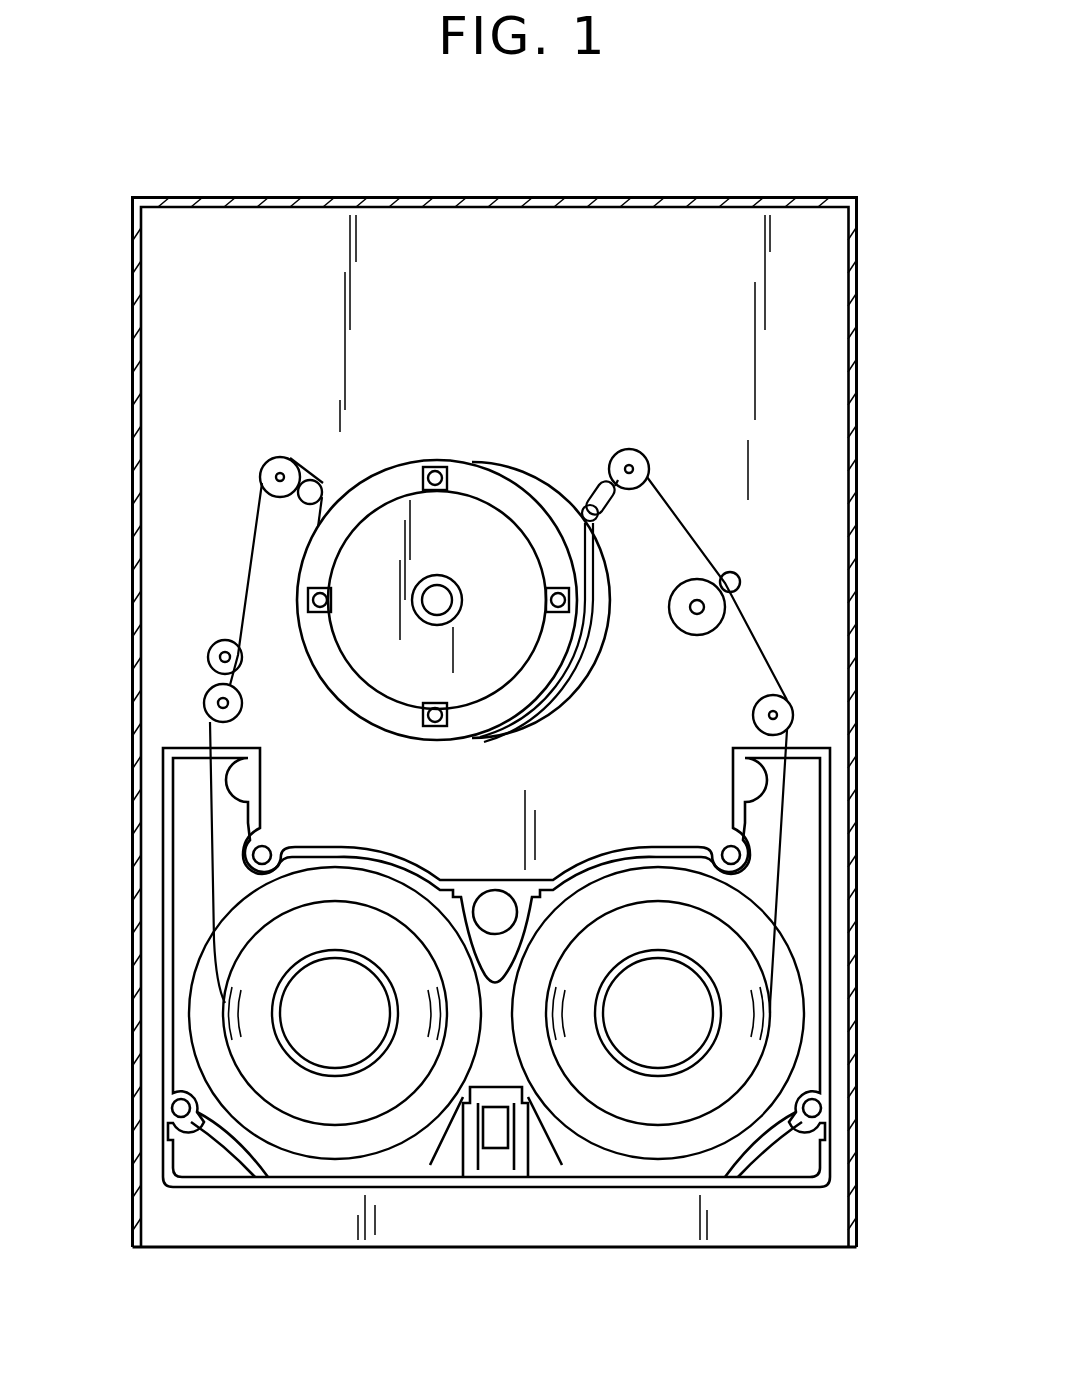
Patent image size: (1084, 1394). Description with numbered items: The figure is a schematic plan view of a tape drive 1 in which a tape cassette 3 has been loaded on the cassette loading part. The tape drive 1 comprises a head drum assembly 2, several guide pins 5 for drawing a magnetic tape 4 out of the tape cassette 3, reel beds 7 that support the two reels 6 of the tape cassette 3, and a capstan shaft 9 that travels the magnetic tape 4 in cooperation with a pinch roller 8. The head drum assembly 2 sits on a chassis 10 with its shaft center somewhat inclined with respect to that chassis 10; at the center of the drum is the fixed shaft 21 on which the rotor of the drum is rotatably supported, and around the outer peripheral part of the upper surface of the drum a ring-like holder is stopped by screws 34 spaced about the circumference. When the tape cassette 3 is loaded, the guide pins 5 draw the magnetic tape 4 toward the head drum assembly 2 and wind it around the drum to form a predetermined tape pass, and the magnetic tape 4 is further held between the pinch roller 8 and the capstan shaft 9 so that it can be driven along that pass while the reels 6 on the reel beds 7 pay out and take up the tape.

The tape drive 1 is at (908, 242).
The head drum assembly 2 is at (516, 488).
The tape cassette 3 is at (832, 792).
The magnetic tape 4 is at (257, 555).
The guide pin 5 is at (282, 457).
The reel 6 is at (250, 1055).
The reel bed 7 is at (333, 1045).
The pinch roller 8 is at (705, 627).
The capstan shaft 9 is at (735, 572).
The chassis 10 is at (473, 1230).
The fixed shaft 21 is at (435, 604).
The screw 34 is at (435, 466).